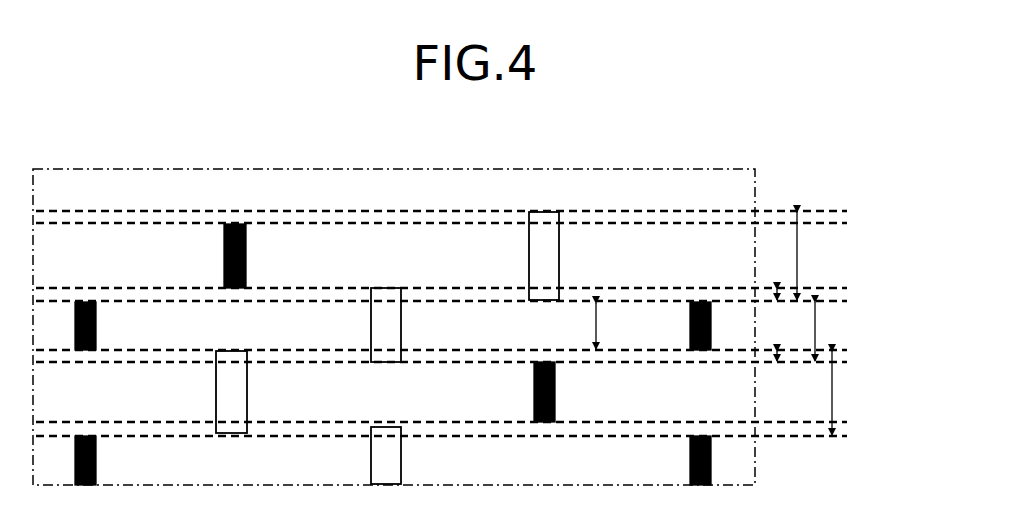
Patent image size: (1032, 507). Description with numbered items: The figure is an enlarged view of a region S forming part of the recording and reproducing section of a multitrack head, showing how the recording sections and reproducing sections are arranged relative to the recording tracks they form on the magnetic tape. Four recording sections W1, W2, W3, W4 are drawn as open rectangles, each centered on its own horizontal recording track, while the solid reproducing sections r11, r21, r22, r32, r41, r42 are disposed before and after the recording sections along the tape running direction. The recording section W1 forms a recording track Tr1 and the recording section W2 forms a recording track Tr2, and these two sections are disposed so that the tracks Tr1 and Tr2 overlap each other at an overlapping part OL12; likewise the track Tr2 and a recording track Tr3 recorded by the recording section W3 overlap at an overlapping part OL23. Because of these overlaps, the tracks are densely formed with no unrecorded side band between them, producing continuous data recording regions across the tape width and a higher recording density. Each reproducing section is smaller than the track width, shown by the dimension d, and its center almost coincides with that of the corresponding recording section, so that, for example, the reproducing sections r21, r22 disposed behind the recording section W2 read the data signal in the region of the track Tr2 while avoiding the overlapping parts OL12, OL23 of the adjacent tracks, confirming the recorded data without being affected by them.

The region S is at (161, 169).
The reproducing section r11 is at (224, 249).
The reproducing section r21 is at (96, 323).
The reproducing section r22 is at (690, 327).
The reproducing section r32 is at (555, 400).
The reproducing section r41 is at (96, 457).
The reproducing section r42 is at (690, 466).
The recording section W1 is at (548, 263).
The recording section W2 is at (388, 329).
The recording section W3 is at (237, 400).
The recording section W4 is at (390, 466).
The track width / element spacing d is at (584, 326).
The recording track Tr1 is at (798, 257).
The recording track Tr2 is at (816, 327).
The recording track Tr3 is at (833, 397).
The overlapping part OL12 is at (779, 303).
The overlapping part OL23 is at (779, 364).